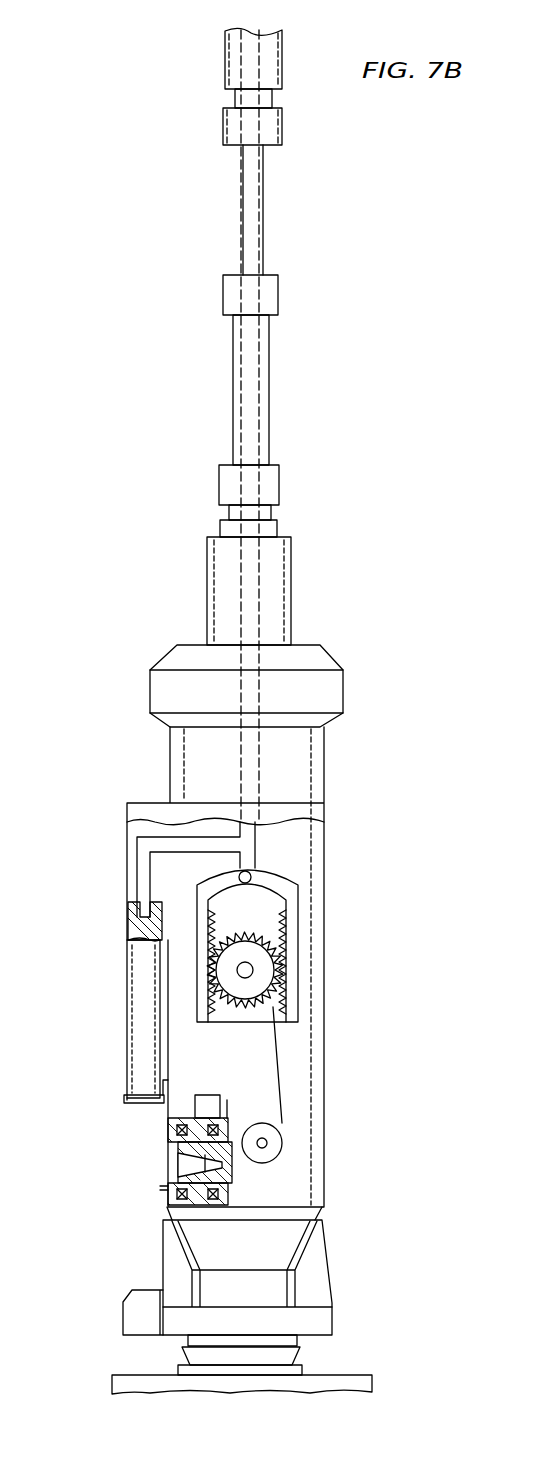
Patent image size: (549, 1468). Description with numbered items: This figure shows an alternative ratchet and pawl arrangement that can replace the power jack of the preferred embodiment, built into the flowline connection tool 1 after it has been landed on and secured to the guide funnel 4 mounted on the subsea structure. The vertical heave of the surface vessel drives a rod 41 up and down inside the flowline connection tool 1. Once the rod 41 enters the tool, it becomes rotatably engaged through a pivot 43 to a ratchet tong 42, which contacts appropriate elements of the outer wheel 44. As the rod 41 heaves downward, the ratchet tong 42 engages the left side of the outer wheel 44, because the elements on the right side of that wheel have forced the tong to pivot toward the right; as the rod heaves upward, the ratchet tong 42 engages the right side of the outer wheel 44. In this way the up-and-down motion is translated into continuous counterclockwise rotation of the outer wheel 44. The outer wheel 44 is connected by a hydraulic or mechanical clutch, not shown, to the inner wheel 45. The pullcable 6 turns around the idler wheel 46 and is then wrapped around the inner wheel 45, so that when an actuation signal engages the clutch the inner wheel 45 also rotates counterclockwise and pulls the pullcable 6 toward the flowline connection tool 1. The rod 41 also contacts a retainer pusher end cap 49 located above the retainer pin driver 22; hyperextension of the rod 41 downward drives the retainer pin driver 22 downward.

The rod 41 is at (263, 217).
The flowline connection tool 1 is at (330, 763).
The pivot 43 is at (251, 877).
The ratchet tong 42 is at (298, 912).
The inner wheel 45 is at (266, 960).
The outer wheel 44 is at (253, 1008).
The idler wheel 46 is at (280, 1140).
The retainer pusher end cap 49 is at (128, 925).
The retainer pin driver 22 is at (125, 1050).
The pullcable 6 is at (75, 1203).
The guide funnel 4 is at (332, 1260).